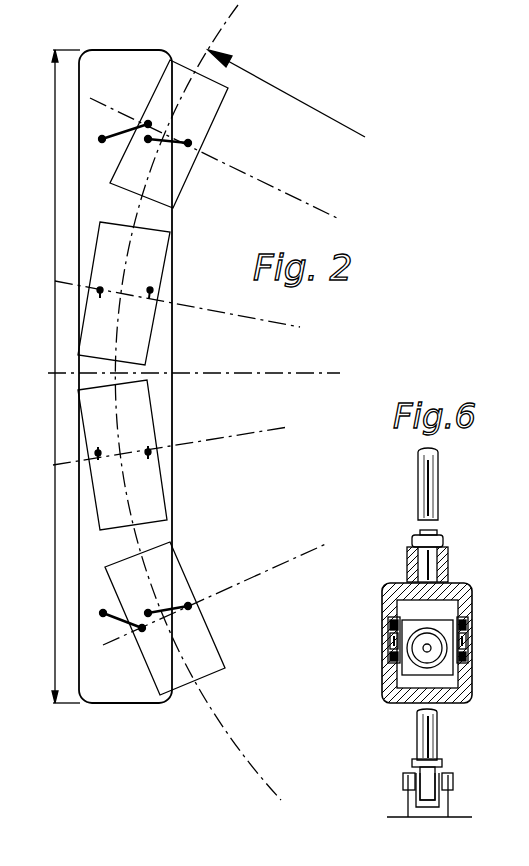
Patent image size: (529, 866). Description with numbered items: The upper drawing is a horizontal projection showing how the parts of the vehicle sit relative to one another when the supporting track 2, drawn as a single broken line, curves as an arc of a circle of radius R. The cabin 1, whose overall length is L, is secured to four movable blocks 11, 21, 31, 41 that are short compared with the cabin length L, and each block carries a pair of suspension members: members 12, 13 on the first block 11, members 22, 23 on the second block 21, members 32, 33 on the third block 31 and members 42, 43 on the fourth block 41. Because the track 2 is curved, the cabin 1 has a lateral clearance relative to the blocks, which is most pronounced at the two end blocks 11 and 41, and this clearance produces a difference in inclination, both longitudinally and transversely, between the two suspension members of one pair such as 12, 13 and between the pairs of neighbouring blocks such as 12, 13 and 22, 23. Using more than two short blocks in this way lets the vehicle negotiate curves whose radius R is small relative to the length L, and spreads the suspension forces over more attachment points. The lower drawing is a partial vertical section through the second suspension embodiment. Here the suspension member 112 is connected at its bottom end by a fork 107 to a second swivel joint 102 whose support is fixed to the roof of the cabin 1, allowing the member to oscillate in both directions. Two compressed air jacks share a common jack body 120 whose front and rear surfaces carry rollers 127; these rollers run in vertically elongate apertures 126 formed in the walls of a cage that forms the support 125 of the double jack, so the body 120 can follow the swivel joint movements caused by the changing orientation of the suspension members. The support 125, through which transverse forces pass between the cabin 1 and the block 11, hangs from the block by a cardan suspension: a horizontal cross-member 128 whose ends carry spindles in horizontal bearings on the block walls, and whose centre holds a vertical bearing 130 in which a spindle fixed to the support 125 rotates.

In FIG. 2, the cabin 1 is at (122, 49).
In FIG. 2, the track 2 is at (221, 33).
In FIG. 2, the cabin length L is at (66, 376).
In FIG. 2, the radius of the track arc R is at (286, 93).
In FIG. 2, the movable block 11 is at (208, 130).
In FIG. 2, the suspension member 12 is at (103, 143).
In FIG. 2, the suspension member 13 is at (147, 145).
In FIG. 2, the movable block 21 is at (163, 281).
In FIG. 2, the suspension member 22 is at (100, 299).
In FIG. 2, the suspension member 23 is at (148, 299).
In FIG. 2, the movable block 31 is at (155, 421).
In FIG. 2, the suspension member 32 is at (98, 461).
In FIG. 2, the suspension member 33 is at (148, 460).
In FIG. 2, the movable block 41 is at (187, 577).
In FIG. 2, the suspension member 42 is at (115, 619).
In FIG. 2, the suspension member 43 is at (182, 612).
In FIG. 6, the jack body 120 is at (430, 626).
In FIG. 6, the support 125 is at (388, 590).
In FIG. 6, the aperture 126 is at (392, 627).
In FIG. 6, the roller 127 is at (393, 648).
In FIG. 6, the horizontal cross-member 128 is at (447, 564).
In FIG. 6, the vertical bearing 130 is at (442, 544).
In FIG. 6, the suspension member 112 is at (423, 732).
In FIG. 6, the fork 107 is at (441, 763).
In FIG. 6, the second swivel joint 102 is at (418, 787).